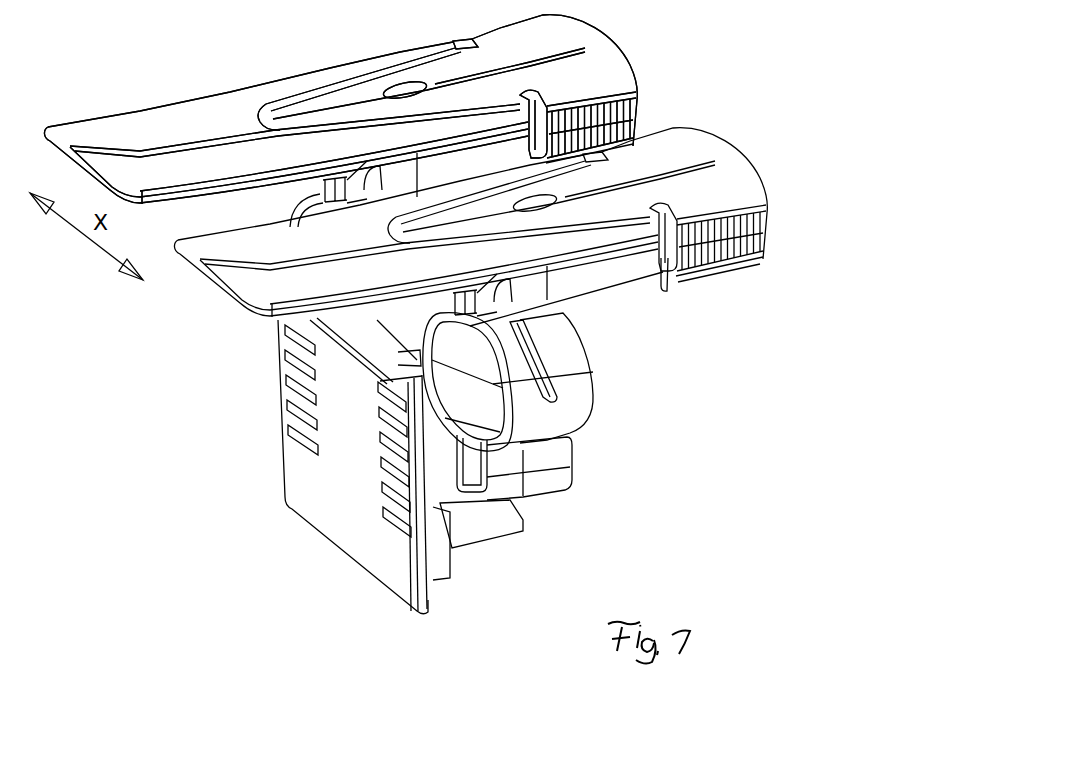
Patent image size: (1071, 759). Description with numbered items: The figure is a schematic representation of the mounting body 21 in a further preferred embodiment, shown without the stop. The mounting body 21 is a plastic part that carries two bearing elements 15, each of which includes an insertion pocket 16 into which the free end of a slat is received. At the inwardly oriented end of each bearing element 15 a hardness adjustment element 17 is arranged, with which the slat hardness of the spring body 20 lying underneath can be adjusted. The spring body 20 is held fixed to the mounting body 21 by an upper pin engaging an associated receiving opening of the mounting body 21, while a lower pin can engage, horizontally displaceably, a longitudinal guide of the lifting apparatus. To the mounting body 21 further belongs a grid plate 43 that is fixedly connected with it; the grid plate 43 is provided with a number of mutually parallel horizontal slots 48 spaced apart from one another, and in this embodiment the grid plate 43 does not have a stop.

The bearing element 15 is at (573, 72).
The insertion pocket 16 is at (605, 281).
The hardness adjustment element 17 is at (752, 268).
The spring body 20 is at (568, 403).
The mounting body 21 is at (282, 466).
The grid plate 43 is at (293, 403).
The horizontal slots 48 is at (293, 360).